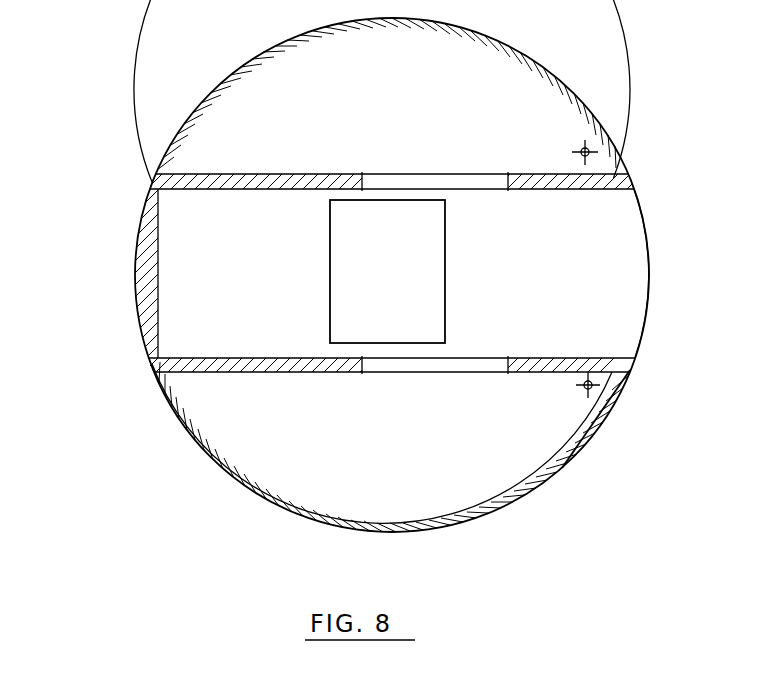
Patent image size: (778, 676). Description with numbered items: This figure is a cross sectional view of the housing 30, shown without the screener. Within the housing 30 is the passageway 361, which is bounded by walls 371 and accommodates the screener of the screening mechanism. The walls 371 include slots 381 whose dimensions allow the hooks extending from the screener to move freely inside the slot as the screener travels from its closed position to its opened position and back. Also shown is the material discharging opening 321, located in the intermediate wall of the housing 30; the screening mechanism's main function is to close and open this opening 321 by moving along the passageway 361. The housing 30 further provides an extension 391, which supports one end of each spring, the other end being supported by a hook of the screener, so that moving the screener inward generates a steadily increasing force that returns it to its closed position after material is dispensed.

The housing 30 is at (140, 273).
The walls 371 is at (243, 367).
The slots 381 is at (418, 182).
The material discharging opening 321 is at (363, 313).
The passageway 361 is at (602, 260).
The extension 391 is at (605, 414).